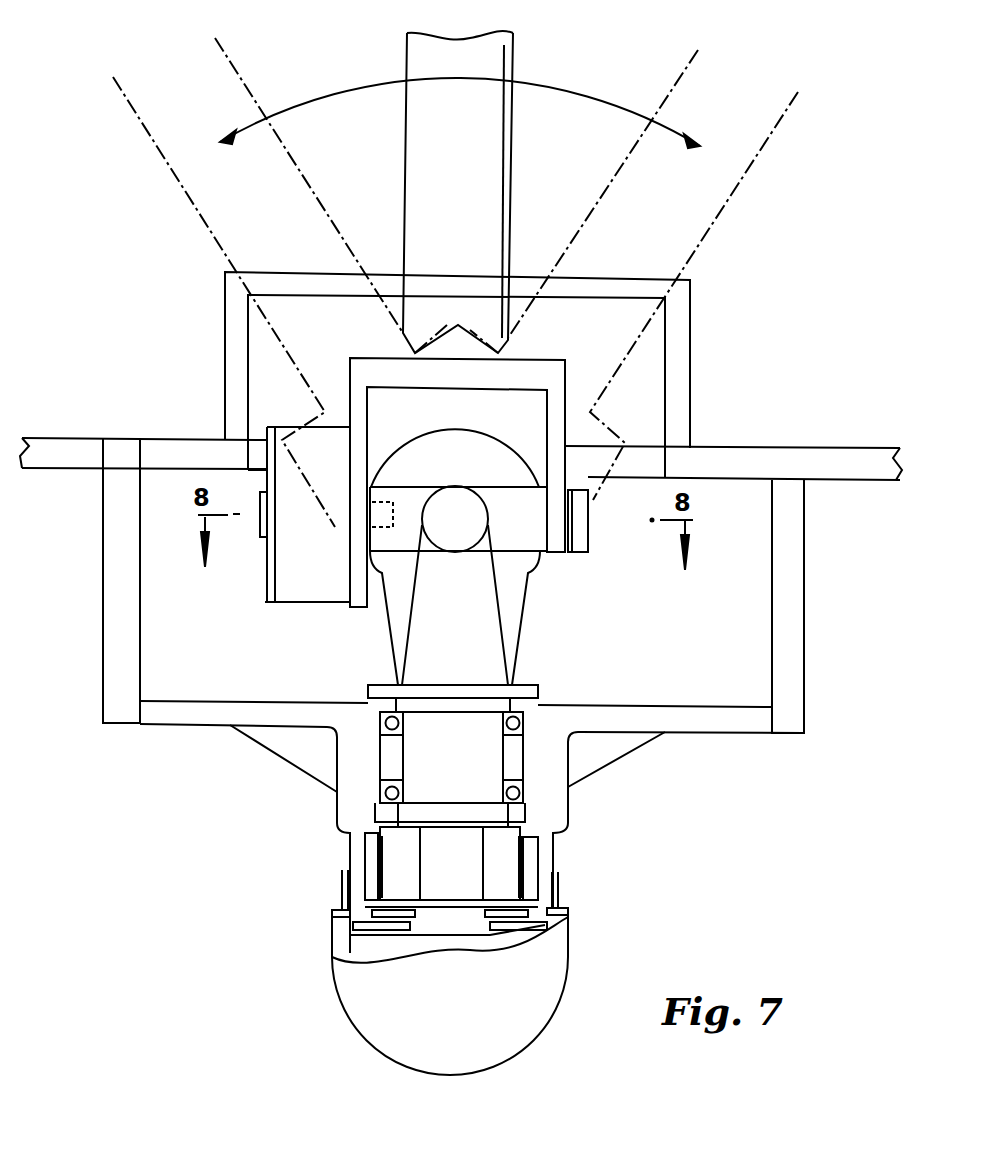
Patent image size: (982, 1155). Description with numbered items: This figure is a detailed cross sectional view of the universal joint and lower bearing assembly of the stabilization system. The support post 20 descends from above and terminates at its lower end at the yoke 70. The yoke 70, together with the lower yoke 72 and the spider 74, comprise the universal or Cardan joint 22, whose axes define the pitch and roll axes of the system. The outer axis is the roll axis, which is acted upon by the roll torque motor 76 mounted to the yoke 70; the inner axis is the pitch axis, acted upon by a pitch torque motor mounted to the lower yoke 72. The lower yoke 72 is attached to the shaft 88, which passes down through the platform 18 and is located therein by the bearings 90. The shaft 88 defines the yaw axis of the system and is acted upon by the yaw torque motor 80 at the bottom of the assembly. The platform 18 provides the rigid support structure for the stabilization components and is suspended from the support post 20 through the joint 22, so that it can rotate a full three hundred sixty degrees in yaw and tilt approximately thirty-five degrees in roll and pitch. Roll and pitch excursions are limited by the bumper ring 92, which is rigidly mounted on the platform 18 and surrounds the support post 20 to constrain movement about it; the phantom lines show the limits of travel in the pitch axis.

The platform 18 is at (782, 735).
The support post 20 is at (505, 60).
The universal joint 22 is at (546, 573).
The yoke 70 is at (523, 368).
The lower yoke 72 is at (487, 660).
The spider 74 is at (518, 557).
The roll torque motor 76 is at (308, 595).
The yaw torque motor 80 is at (397, 857).
The shaft 88 is at (383, 757).
The bearings 90 is at (513, 790).
The bumper ring 92 is at (692, 282).